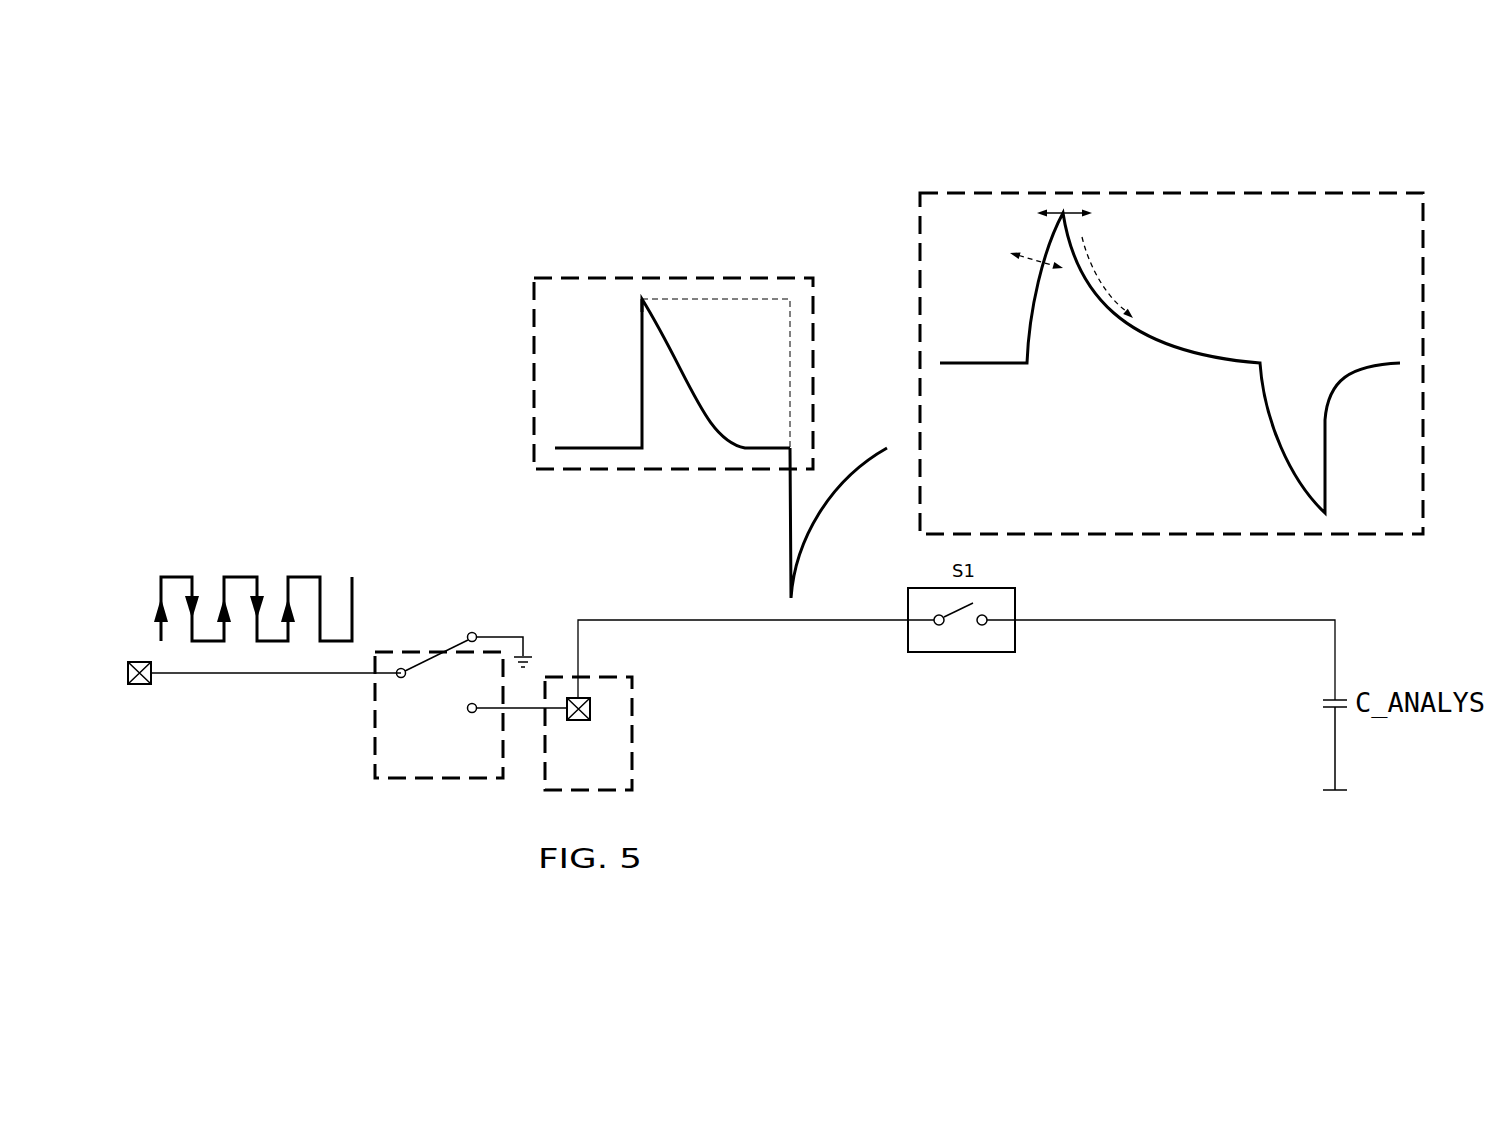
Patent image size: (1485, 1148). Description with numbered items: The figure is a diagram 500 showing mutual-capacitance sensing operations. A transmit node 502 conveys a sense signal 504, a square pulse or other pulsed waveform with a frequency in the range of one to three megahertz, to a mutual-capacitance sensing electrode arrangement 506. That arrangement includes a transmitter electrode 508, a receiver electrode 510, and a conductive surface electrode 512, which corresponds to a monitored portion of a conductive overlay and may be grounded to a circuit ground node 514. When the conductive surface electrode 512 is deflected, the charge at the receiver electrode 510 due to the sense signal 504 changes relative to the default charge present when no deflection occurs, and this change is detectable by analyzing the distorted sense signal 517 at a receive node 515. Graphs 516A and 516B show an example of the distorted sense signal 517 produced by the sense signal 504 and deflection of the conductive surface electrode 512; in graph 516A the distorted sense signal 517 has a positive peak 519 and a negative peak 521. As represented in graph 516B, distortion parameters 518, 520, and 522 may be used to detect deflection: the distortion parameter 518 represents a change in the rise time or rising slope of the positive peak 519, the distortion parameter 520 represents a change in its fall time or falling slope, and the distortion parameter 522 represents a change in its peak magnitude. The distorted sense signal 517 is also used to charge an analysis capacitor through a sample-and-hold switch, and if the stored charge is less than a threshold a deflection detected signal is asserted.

The diagram 500 is at (366, 205).
The transmit node 502 is at (142, 686).
The sense signal 504 is at (174, 576).
The mutual-capacitance sensing electrode arrangement 506 is at (439, 724).
The transmitter electrode 508 is at (401, 678).
The receiver electrode 510 is at (471, 713).
The conductive surface electrode 512 is at (470, 631).
The circuit ground node 514 is at (540, 663).
The receive node 515 is at (582, 721).
The graph 516A is at (967, 363).
The graph 516B is at (1171, 331).
The distorted sense signal 517 is at (598, 447).
The distortion parameter 518 is at (1033, 262).
The positive peak 519 is at (640, 300).
The distortion parameter 520 is at (1100, 286).
The negative peak 521 is at (789, 597).
The distortion parameter 522 is at (1077, 203).